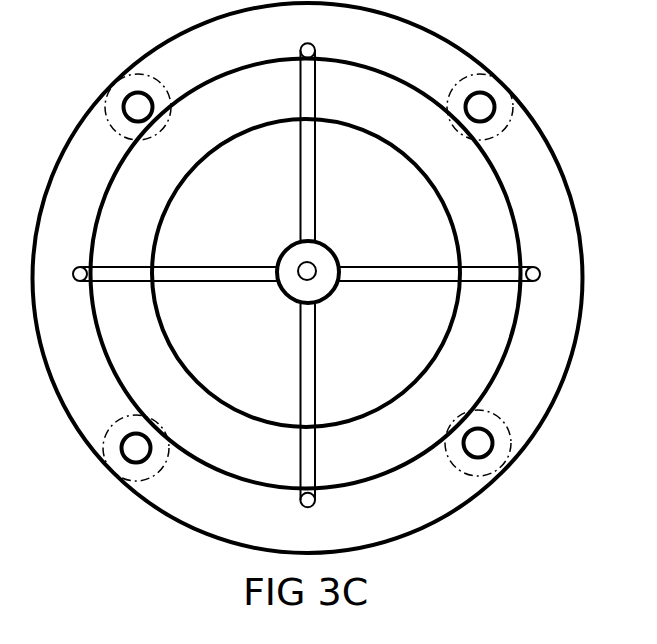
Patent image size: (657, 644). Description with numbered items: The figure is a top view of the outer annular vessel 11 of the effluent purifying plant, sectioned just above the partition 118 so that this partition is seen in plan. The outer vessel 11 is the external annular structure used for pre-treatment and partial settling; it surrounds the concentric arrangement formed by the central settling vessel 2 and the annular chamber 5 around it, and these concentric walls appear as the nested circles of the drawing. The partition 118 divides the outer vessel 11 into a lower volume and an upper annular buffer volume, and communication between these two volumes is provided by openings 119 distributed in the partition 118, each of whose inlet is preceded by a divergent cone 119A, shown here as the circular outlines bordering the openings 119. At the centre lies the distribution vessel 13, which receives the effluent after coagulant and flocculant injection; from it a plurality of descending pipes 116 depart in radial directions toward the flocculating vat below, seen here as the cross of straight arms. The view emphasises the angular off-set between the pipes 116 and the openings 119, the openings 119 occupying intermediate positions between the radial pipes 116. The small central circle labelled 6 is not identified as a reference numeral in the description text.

The outer annular vessel 11 is at (70, 132).
The annular chamber 5 is at (118, 152).
The settling vessel 2 is at (163, 212).
The distribution vessel 13 is at (285, 255).
The central bore 6 is at (301, 278).
The descending pipes 116 is at (300, 183).
The partition 118 is at (535, 203).
The openings 119 is at (134, 105).
The divergent cone 119A is at (166, 120).